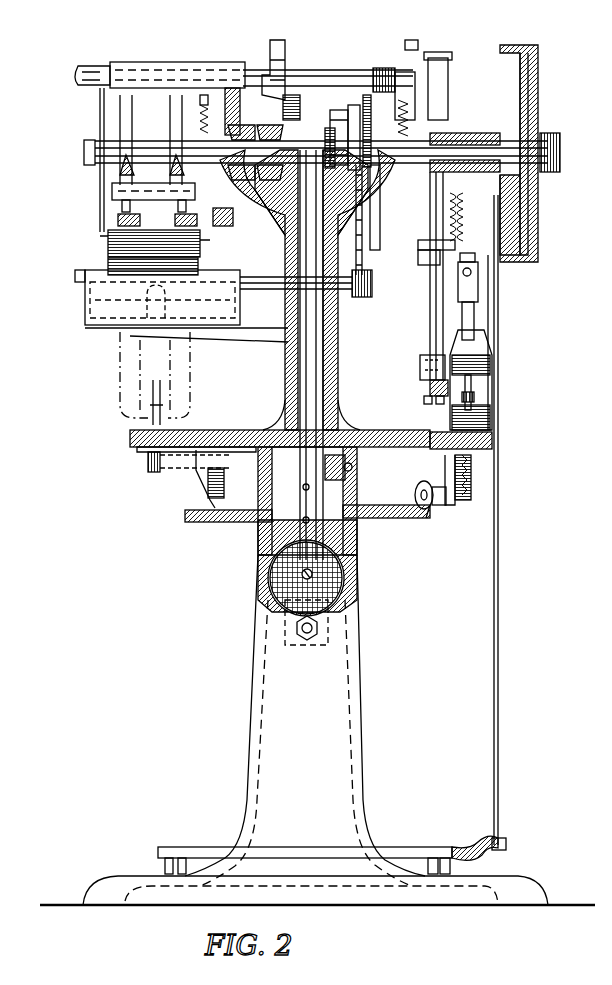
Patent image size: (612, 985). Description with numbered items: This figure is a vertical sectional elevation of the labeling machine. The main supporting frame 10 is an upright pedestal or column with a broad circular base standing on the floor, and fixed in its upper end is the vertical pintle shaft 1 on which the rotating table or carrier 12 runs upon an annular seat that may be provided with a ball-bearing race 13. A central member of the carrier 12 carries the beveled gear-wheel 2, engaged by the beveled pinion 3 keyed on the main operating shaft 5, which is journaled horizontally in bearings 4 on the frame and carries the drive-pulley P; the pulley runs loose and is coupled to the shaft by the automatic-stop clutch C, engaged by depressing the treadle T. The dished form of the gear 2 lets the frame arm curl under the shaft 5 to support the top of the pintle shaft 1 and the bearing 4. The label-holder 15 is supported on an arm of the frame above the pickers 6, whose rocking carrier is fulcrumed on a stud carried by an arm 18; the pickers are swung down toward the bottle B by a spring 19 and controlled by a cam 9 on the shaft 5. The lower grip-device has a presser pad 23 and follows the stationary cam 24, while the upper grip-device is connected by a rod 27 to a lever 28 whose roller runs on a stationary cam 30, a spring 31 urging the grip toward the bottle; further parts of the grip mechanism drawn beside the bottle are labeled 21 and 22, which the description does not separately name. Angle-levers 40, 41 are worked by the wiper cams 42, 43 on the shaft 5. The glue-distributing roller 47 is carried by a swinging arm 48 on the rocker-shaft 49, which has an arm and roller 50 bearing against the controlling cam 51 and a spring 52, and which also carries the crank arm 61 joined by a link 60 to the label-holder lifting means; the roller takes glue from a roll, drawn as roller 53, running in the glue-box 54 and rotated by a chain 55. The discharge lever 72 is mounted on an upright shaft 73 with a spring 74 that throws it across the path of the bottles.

The vertical pintle or shaft 1 is at (524, 323).
The beveled gear-wheel 2 is at (245, 176).
The beveled pinion 3 is at (254, 130).
The bearings 4 is at (277, 128).
The main operating shaft 5 is at (560, 152).
The glue-applying picker-plates 6 is at (176, 223).
The cam 9 is at (232, 90).
The main supporting frame 10 is at (45, 148).
The rotating table or carrier 12 is at (205, 446).
The ball-bearing race 13 is at (352, 467).
The label-holder 15 is at (152, 200).
The arm 18 is at (227, 225).
The spring 19 is at (205, 105).
The pawl rod 21 is at (476, 283).
The pinion 22 is at (150, 457).
The presser pad or face member 23 is at (470, 385).
The stationary actuating cam 24 is at (218, 516).
The rod 27 is at (470, 466).
The lever 28 is at (438, 500).
The stationary cam 30 is at (427, 516).
The spring 31 is at (468, 462).
The angle-lever 40 is at (337, 110).
The angle-lever 41 is at (361, 105).
The cam 42 is at (332, 158).
The cam 43 is at (378, 185).
The glue-distributing roller 47 is at (152, 243).
The swinging arm 48 is at (100, 152).
The rocker-shaft 49 is at (342, 70).
The arm and roller 50 is at (402, 80).
The controlling cam 51 is at (420, 240).
The spring 52 is at (420, 104).
The roller 53 is at (152, 265).
The glue-box or reservoir 54 is at (95, 292).
The chain 55 is at (365, 238).
The link 60 is at (284, 56).
The crank arm 61 is at (270, 54).
The discharge arm or lever 72 is at (430, 390).
The upright shaft 73 is at (432, 330).
The spring 74 is at (467, 217).
The bottle B is at (480, 350).
The automatic-stop clutch C is at (480, 130).
The drive-pulley P is at (528, 100).
The treadle T is at (422, 855).